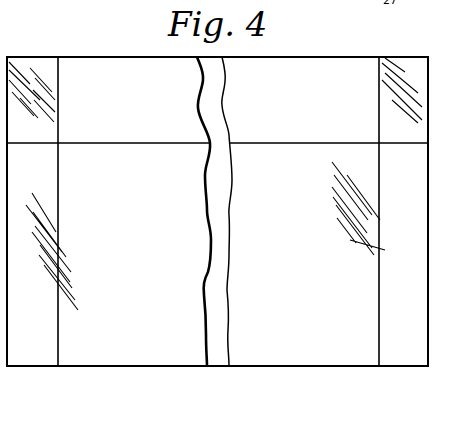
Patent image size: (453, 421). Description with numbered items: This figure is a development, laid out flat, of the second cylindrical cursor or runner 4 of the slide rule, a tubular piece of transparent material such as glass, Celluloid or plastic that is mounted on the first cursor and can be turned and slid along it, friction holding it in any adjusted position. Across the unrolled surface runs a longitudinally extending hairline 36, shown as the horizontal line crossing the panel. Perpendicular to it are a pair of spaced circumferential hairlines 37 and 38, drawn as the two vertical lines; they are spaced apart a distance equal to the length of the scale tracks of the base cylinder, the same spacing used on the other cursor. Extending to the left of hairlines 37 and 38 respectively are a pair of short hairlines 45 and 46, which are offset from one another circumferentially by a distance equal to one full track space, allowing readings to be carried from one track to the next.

The cursor 4 is at (433, 53).
The longitudinally extending hairline 36 is at (147, 128).
The circumferential hairline 37 is at (58, 216).
The circumferential hairline 38 is at (380, 181).
The short hairline 45 is at (56, 312).
The short hairline 46 is at (379, 297).